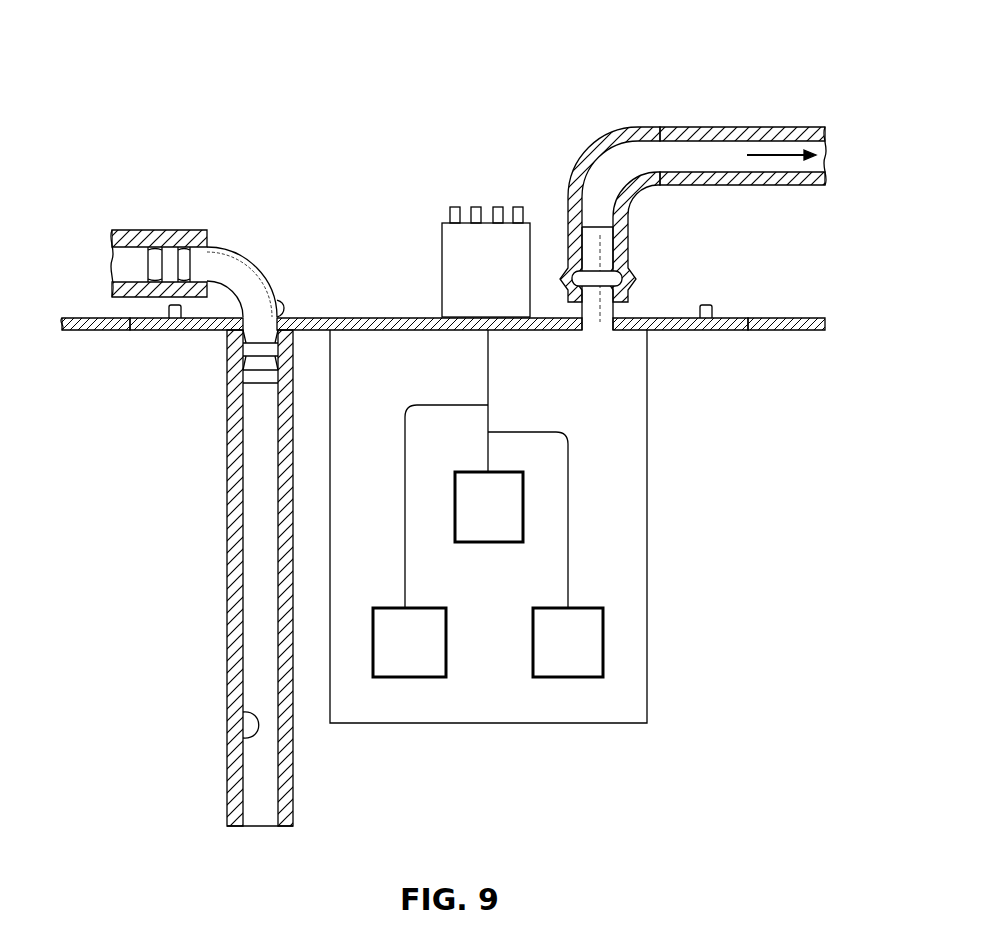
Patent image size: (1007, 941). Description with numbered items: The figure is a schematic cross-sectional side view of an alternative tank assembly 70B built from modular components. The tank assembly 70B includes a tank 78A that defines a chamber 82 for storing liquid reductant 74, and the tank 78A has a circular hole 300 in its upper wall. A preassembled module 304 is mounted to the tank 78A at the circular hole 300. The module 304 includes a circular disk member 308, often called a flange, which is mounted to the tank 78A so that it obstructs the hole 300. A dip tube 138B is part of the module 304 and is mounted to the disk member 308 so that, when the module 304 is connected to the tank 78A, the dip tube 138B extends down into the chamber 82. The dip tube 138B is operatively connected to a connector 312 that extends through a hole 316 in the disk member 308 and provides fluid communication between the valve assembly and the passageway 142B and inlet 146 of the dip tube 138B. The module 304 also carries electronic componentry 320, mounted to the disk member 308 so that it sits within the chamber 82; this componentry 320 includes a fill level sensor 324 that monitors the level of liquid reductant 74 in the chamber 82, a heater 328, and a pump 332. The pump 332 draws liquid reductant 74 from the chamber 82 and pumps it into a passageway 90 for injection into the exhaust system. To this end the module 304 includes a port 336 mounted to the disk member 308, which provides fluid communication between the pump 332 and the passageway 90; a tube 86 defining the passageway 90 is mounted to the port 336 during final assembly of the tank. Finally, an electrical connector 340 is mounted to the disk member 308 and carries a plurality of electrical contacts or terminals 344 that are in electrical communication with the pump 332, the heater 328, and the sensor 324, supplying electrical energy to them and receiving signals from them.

The tank assembly 70B is at (735, 492).
The liquid reductant 74 is at (780, 150).
The tank 78A is at (92, 330).
The chamber 82 is at (714, 553).
The tube 86 is at (705, 127).
The passageway 90 is at (648, 139).
The dip tube 138B is at (235, 556).
The passageway 142B is at (243, 738).
The inlet 146 is at (290, 838).
The circular hole 300 is at (735, 318).
The preassembled module 304 is at (382, 262).
The circular disk member 308 is at (663, 318).
The connector 312 is at (243, 268).
The hole 316 is at (280, 305).
The electronic componentry 320 is at (650, 430).
The fill level sensor 324 is at (478, 542).
The heater 328 is at (405, 677).
The pump 332 is at (553, 677).
The port 336 is at (596, 245).
The electrical connector 340 is at (440, 250).
The electrical contacts or terminals 344 is at (518, 207).